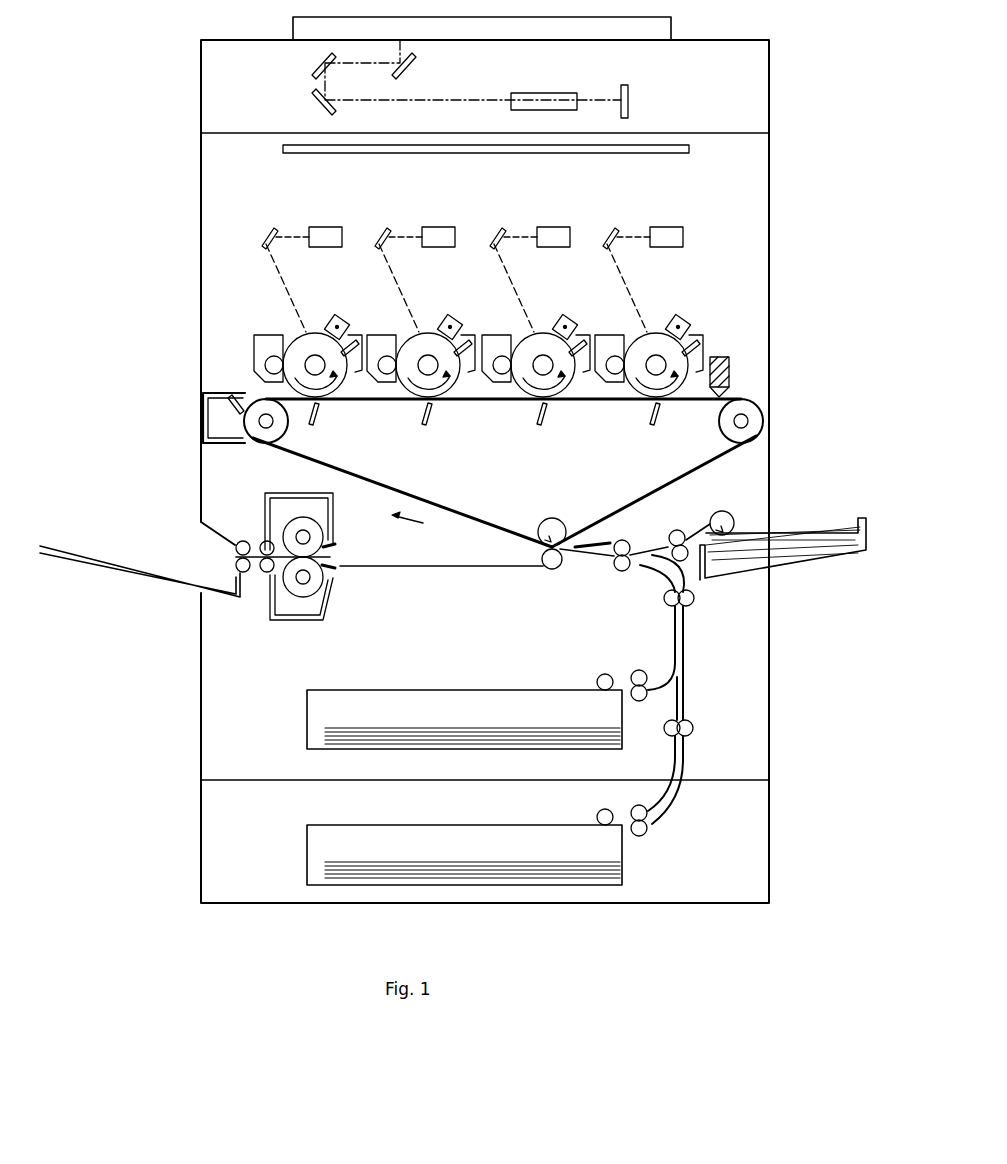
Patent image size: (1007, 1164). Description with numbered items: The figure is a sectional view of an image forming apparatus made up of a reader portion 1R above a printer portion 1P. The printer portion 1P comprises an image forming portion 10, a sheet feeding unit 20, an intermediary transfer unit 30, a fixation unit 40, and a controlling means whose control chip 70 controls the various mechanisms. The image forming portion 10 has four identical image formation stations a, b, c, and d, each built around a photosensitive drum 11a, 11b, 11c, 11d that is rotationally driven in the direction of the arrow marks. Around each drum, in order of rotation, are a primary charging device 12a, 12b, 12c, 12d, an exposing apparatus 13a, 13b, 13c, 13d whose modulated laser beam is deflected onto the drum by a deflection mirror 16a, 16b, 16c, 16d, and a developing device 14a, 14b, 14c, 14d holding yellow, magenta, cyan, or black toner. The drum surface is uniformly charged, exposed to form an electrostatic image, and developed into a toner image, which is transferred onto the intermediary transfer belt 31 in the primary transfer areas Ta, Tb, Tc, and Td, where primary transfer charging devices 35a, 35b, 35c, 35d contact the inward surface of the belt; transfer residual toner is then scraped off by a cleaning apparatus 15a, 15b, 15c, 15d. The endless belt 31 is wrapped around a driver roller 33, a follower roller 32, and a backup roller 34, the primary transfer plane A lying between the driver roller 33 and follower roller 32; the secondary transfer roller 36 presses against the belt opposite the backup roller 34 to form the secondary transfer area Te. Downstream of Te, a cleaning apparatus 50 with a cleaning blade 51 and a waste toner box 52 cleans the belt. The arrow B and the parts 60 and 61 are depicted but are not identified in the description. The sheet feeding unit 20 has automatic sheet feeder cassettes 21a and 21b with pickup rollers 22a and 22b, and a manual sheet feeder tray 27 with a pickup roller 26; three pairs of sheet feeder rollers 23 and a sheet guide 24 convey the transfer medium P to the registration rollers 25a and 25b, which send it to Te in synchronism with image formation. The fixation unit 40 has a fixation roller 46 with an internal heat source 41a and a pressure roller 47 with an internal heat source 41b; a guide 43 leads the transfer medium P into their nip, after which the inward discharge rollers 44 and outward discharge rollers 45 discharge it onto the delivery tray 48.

The reader portion 1R is at (769, 82).
The printer portion 1P is at (769, 177).
The control chip 70 is at (283, 148).
The image forming portion 10 is at (708, 260).
The deflection mirror 16d is at (271, 229).
The deflection mirror 16c is at (393, 264).
The deflection mirror 16b is at (508, 264).
The deflection mirror 16a is at (621, 264).
The exposing apparatus 13d is at (328, 227).
The exposing apparatus 13c is at (444, 219).
The exposing apparatus 13b is at (560, 219).
The exposing apparatus 13a is at (673, 219).
The image formation station d is at (297, 227).
The image formation station c is at (405, 213).
The image formation station b is at (520, 213).
The image formation station a is at (633, 213).
The developing device 14d is at (266, 335).
The developing device 14c is at (379, 340).
The developing device 14b is at (494, 340).
The developing device 14a is at (607, 340).
The photosensitive drum 11d is at (308, 333).
The photosensitive drum 11c is at (428, 342).
The photosensitive drum 11b is at (543, 342).
The photosensitive drum 11a is at (656, 342).
The primary charging device 12d is at (341, 319).
The primary charging device 12c is at (458, 314).
The primary charging device 12b is at (574, 314).
The primary charging device 12a is at (687, 314).
The cleaning apparatus 15d is at (354, 373).
The cleaning apparatus 15c is at (470, 367).
The cleaning apparatus 15b is at (586, 367).
The cleaning apparatus 15a is at (710, 340).
The image sensor / density detecting sensor 60 is at (741, 364).
The light emitting portion of sensor 61 is at (740, 352).
The primary transfer charging device 35d is at (321, 425).
The primary transfer charging device 35c is at (444, 426).
The primary transfer charging device 35b is at (541, 429).
The primary transfer charging device 35a is at (654, 429).
The primary transfer area Td is at (325, 406).
The primary transfer area Tc is at (401, 417).
The primary transfer area Tb is at (514, 417).
The primary transfer area Ta is at (627, 417).
The secondary transfer area Te is at (540, 547).
The primary transfer plane A is at (563, 404).
The belt lower run direction B is at (416, 525).
The intermediary transfer unit 30 is at (504, 473).
The intermediary transfer belt 31 is at (606, 508).
The follower roller 32 is at (720, 428).
The driver roller 33 is at (260, 447).
The backup roller 34 is at (552, 518).
The secondary transfer roller 36 is at (556, 570).
The cleaning apparatus 50 is at (195, 420).
The cleaning blade 51 is at (232, 398).
The waste toner box 52 is at (216, 443).
The fixation unit 40 is at (305, 573).
The internal heat source 41a is at (314, 538).
The internal heat source 41b is at (324, 574).
The guide 43 is at (442, 568).
The inward discharge rollers 44 is at (294, 630).
The outward discharge rollers 45 is at (245, 540).
The fixation roller 46 is at (306, 493).
The pressure roller 47 is at (313, 623).
The delivery tray 48 is at (132, 570).
The sheet feeding unit 20 is at (698, 674).
The automatic sheet feeder cassette 21a is at (424, 690).
The automatic sheet feeder cassette 21b is at (424, 826).
The pickup roller 22a is at (597, 678).
The pickup roller 22b is at (597, 814).
The sheet feeder rollers 23 is at (682, 531).
The sheet guide 24 is at (688, 578).
The registration roller 25a is at (630, 544).
The registration roller 25b is at (618, 572).
The pickup roller 26 is at (730, 514).
The manual sheet feeder tray 27 is at (820, 572).
The transfer medium P is at (802, 532).